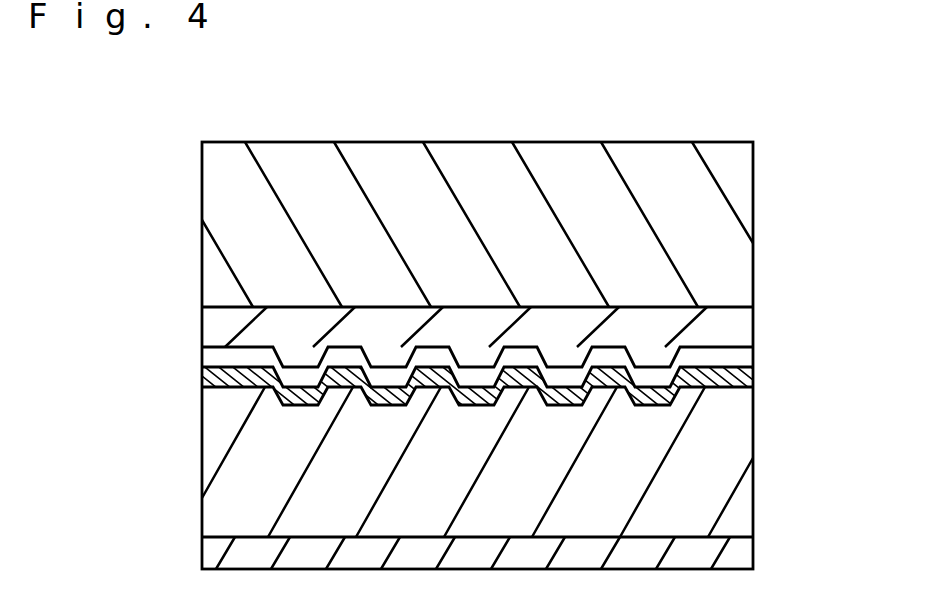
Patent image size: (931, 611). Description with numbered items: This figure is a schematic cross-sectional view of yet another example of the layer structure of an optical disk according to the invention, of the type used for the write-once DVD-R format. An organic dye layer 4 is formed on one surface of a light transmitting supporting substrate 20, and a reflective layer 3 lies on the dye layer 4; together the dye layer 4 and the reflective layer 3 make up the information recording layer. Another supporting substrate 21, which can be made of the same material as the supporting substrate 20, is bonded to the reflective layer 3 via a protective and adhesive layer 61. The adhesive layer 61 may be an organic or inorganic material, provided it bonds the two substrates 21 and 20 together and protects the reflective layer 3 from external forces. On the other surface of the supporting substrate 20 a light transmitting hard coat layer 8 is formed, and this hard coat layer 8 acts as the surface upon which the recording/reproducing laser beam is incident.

The supporting substrate 21 is at (754, 217).
The protective and adhesive layer 61 is at (755, 328).
The reflective layer 3 is at (755, 353).
The organic dye layer 4 is at (754, 381).
The light transmitting supporting substrate 20 is at (755, 509).
The light transmitting hard coat layer 8 is at (755, 552).